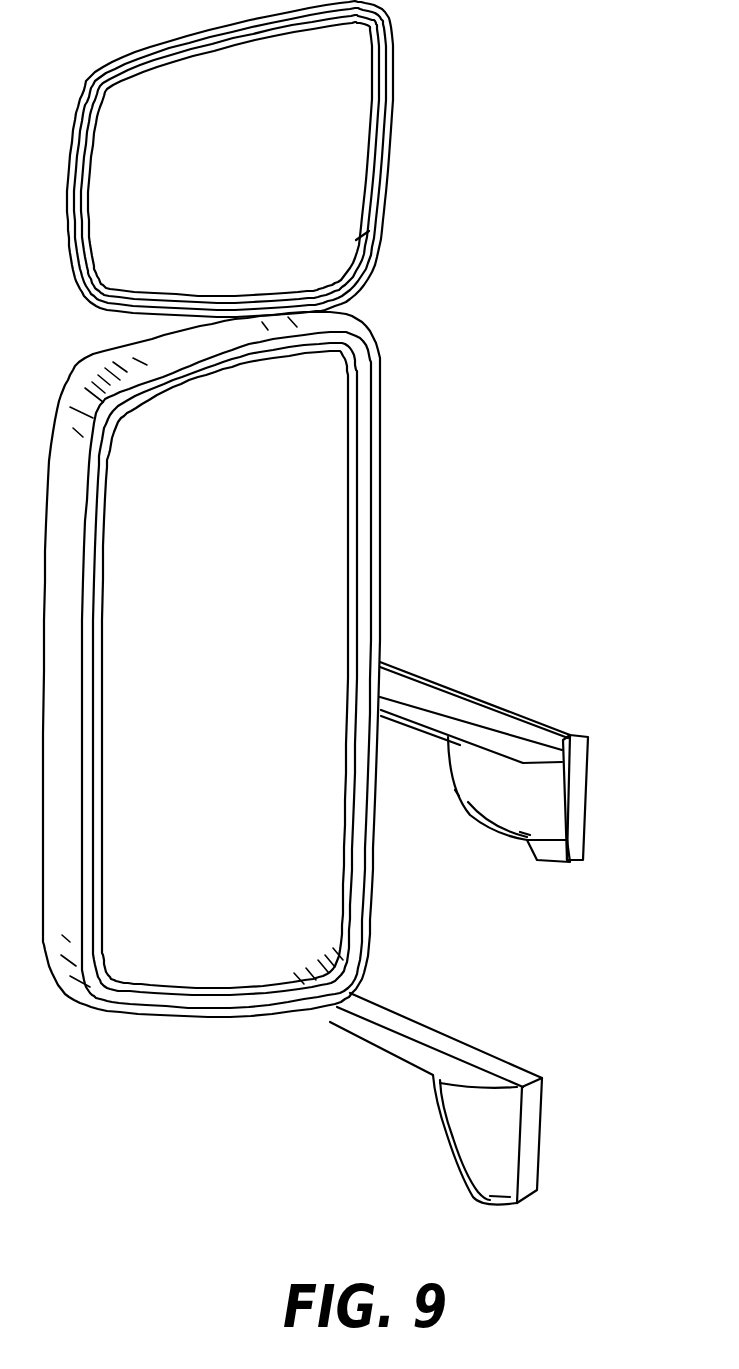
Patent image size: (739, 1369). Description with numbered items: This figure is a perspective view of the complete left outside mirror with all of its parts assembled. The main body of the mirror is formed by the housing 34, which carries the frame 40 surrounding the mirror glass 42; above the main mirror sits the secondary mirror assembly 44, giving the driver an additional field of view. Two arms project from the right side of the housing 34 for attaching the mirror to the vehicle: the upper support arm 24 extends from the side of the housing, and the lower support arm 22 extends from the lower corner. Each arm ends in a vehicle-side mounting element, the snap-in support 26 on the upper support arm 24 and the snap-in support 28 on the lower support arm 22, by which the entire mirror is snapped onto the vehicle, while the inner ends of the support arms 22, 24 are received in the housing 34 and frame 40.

The lower support arm 22 is at (467, 1040).
The upper support arm 24 is at (477, 693).
The snap-in support 26 is at (568, 719).
The snap-in support 28 is at (558, 1062).
The housing 34 is at (384, 530).
The frame 40 is at (376, 400).
The mirror glass 42 is at (337, 432).
The secondary mirror assembly 44 is at (393, 121).